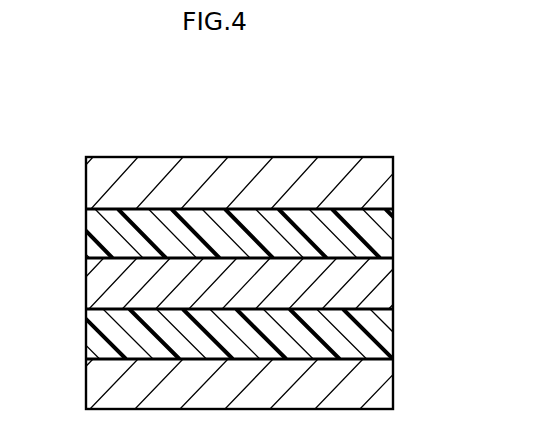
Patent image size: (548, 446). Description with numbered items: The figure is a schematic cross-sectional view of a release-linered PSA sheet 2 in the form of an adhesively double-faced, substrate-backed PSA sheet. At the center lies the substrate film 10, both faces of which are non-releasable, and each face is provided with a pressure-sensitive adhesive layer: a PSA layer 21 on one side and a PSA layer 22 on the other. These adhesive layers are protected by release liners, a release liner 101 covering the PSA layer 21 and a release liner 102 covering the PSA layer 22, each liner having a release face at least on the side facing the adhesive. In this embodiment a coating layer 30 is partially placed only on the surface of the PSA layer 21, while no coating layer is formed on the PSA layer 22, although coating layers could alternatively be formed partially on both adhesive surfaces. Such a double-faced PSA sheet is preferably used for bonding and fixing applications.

The PSA sheet 2 is at (100, 124).
The release liner 101 is at (393, 190).
The coating layer 30 is at (106, 212).
The PSA layer 21 is at (393, 236).
The substrate film 10 is at (393, 291).
The PSA layer 22 is at (393, 340).
The release liner 102 is at (393, 386).